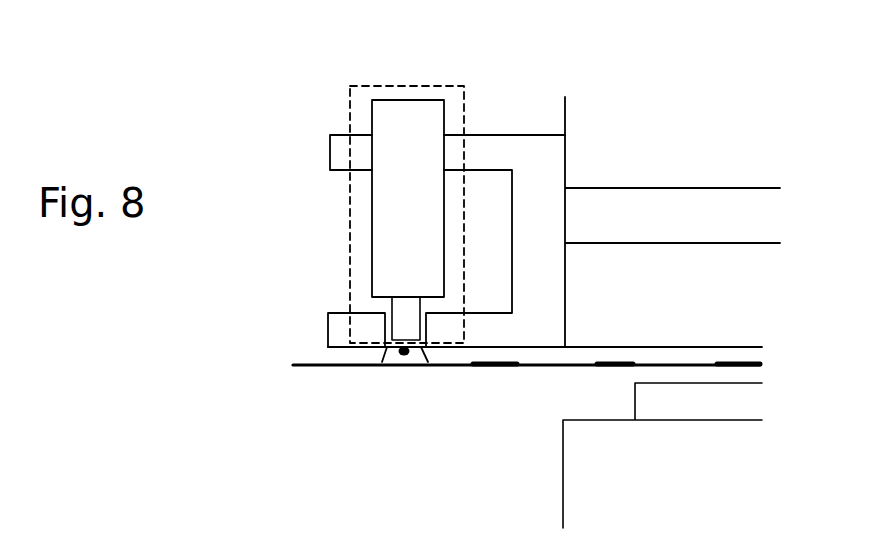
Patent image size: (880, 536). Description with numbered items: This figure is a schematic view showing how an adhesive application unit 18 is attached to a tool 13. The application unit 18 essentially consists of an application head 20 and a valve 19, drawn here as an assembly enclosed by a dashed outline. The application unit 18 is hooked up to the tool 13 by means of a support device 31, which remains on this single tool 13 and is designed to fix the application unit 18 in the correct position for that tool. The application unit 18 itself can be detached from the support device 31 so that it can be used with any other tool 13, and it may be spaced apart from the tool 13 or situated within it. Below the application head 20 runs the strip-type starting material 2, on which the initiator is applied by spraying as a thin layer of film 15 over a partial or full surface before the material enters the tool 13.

The strip-type starting material 2 is at (305, 368).
The tool 13 is at (614, 282).
The thin layer of film 15 is at (492, 368).
The application unit 18 is at (425, 85).
The valve 19 is at (395, 217).
The application head 20 is at (407, 320).
The support device 31 is at (485, 157).